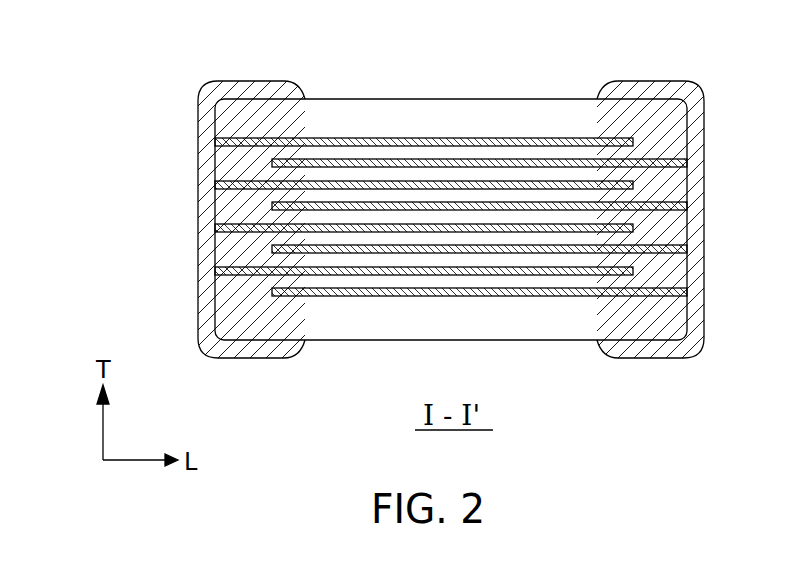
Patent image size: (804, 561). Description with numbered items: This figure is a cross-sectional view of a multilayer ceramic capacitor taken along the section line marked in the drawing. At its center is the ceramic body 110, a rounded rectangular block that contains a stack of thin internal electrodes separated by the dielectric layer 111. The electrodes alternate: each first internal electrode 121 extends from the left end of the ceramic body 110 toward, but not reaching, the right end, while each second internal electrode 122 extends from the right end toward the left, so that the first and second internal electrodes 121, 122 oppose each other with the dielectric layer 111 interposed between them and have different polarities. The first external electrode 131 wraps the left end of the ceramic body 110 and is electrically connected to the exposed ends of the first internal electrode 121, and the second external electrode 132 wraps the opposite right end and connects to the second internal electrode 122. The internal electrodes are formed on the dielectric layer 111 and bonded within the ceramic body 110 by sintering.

The ceramic body 110 is at (452, 99).
The dielectric layer 111 is at (226, 152).
The first internal electrode 121 is at (240, 138).
The second internal electrode 122 is at (272, 163).
The first external electrode 131 is at (255, 80).
The second external electrode 132 is at (652, 88).